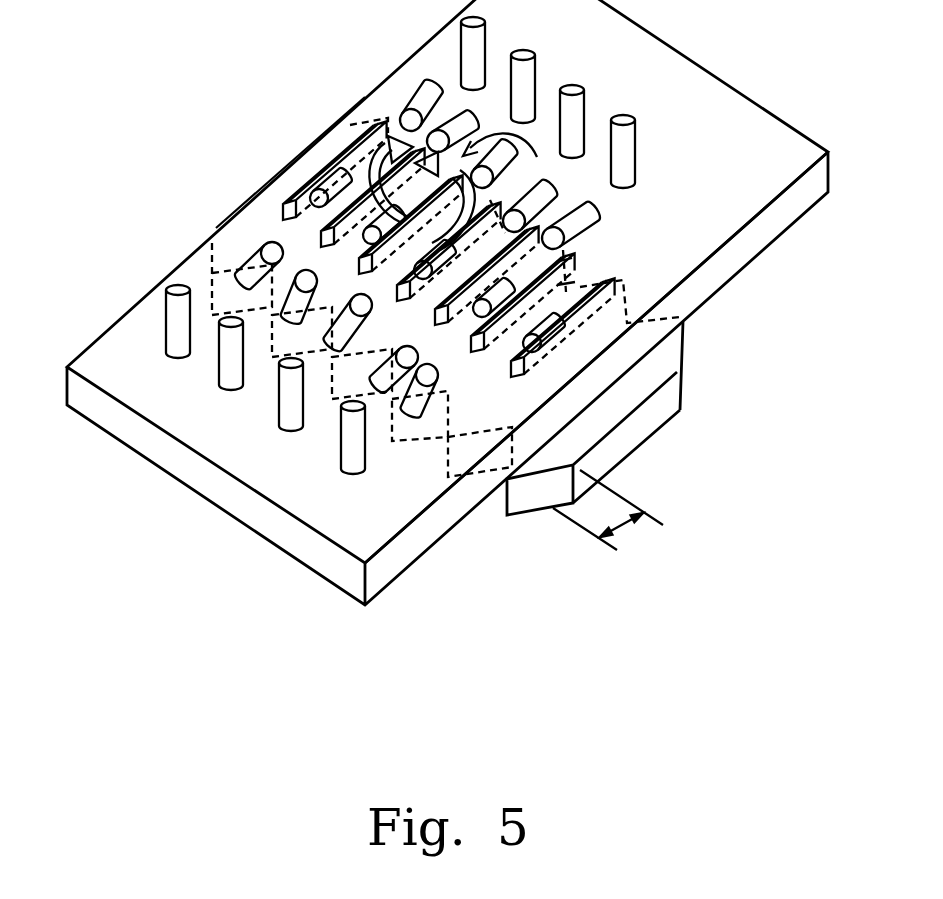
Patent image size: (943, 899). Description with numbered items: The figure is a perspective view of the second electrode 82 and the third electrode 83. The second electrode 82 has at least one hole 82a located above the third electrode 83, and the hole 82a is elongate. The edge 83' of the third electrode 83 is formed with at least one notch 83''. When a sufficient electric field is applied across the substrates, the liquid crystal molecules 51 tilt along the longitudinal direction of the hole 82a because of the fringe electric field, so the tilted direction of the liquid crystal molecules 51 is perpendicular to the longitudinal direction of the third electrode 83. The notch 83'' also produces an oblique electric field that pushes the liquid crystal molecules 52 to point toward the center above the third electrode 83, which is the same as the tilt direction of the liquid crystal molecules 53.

The liquid crystal molecules 51 is at (340, 181).
The liquid crystal molecules 52 is at (250, 258).
The liquid crystal molecules 53 is at (175, 313).
The second electrode 82 is at (293, 475).
The hole 82a is at (560, 310).
The third electrode 83 is at (643, 418).
The edge 83' is at (618, 520).
The notch 83'' is at (488, 551).